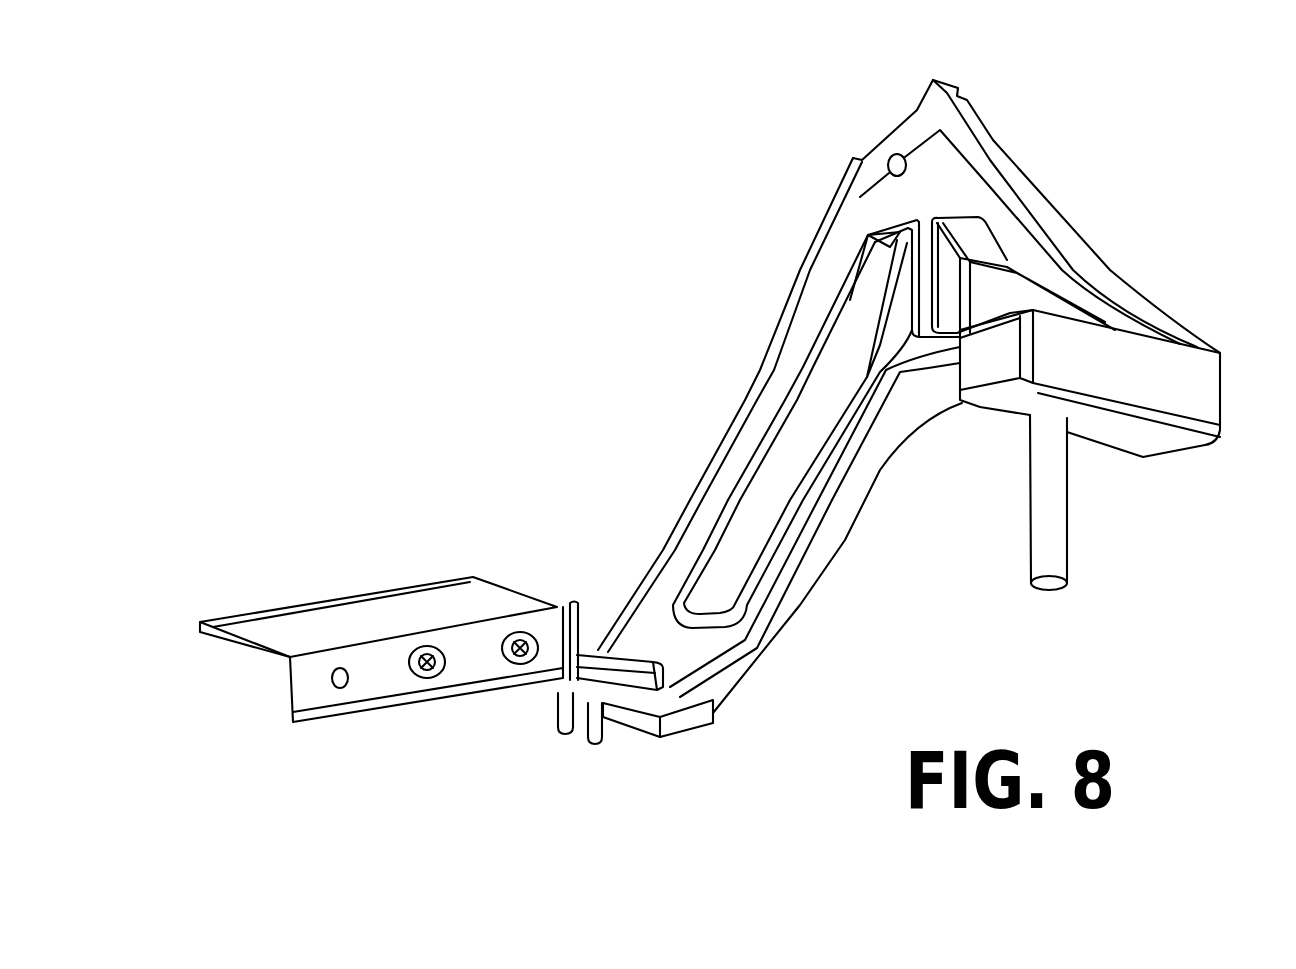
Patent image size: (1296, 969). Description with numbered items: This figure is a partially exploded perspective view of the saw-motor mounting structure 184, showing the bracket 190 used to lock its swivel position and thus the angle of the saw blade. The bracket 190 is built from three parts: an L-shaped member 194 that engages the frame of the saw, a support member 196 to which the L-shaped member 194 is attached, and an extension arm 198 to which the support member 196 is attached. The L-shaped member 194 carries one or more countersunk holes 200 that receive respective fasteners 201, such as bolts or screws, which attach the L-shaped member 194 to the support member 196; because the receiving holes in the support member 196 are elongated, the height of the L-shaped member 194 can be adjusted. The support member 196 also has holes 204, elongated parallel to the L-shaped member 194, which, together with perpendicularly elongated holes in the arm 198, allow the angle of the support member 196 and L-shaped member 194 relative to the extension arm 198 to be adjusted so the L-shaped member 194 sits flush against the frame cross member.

The saw-motor mounting structure 184 is at (1105, 192).
The bracket 190 is at (340, 513).
The L-shaped member 194 is at (243, 612).
The support member 196 is at (627, 690).
The extension arm 198 is at (627, 650).
The countersunk holes 200 is at (513, 664).
The fasteners 201 is at (443, 654).
The holes 204 is at (583, 707).